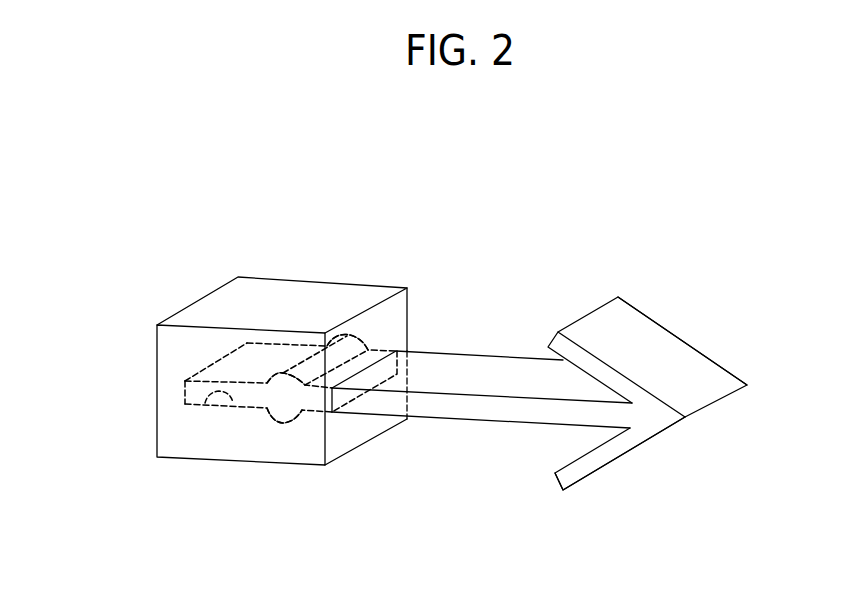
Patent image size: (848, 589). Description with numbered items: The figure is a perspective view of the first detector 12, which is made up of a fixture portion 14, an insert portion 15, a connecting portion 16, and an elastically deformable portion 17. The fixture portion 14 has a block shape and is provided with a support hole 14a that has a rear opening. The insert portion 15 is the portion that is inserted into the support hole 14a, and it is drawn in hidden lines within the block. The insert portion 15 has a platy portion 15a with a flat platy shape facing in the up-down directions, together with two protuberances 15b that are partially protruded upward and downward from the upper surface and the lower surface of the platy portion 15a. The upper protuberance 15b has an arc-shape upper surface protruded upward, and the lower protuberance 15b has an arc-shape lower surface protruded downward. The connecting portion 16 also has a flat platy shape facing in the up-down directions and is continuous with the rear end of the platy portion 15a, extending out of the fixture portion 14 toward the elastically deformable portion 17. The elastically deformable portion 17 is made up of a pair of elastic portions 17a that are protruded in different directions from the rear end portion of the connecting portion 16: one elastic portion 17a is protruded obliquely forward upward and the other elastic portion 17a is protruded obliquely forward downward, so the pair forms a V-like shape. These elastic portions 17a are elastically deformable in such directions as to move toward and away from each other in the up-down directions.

The first detector 12 is at (727, 183).
The fixture portion 14 is at (288, 292).
The support hole 14a is at (233, 404).
The insert portion 15 is at (212, 365).
The platy portion 15a is at (191, 368).
The protuberance 15b is at (360, 338).
The connecting portion 16 is at (453, 366).
The elastically deformable portion 17 is at (706, 378).
The elastic portion 17a is at (635, 325).